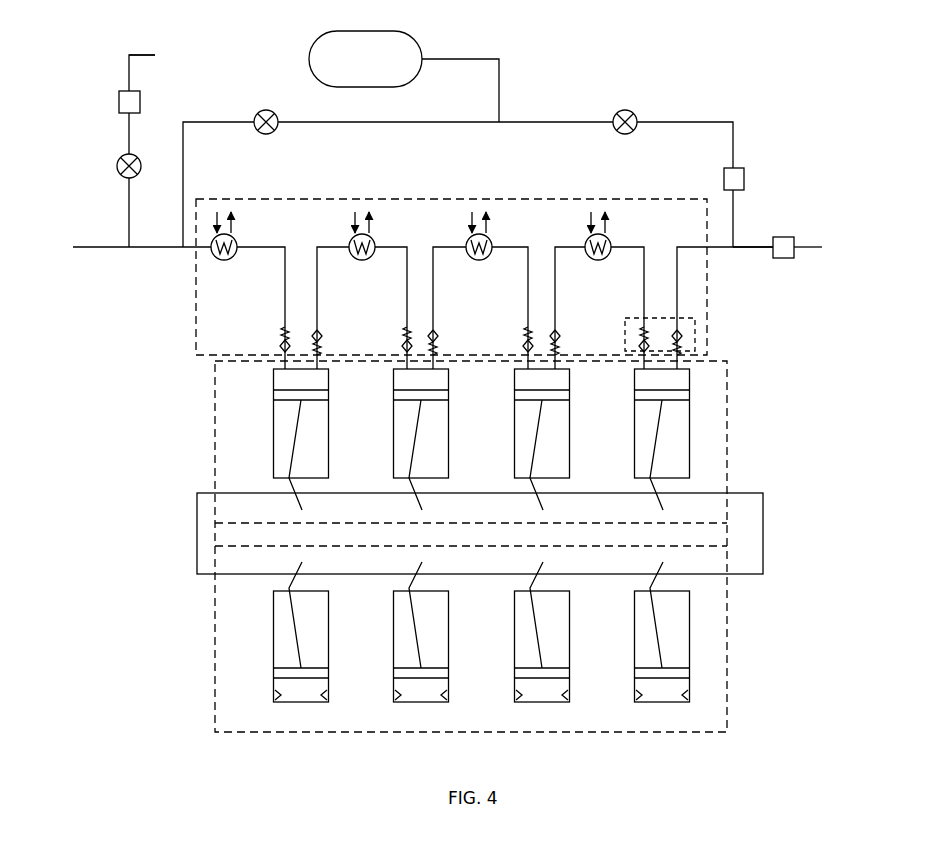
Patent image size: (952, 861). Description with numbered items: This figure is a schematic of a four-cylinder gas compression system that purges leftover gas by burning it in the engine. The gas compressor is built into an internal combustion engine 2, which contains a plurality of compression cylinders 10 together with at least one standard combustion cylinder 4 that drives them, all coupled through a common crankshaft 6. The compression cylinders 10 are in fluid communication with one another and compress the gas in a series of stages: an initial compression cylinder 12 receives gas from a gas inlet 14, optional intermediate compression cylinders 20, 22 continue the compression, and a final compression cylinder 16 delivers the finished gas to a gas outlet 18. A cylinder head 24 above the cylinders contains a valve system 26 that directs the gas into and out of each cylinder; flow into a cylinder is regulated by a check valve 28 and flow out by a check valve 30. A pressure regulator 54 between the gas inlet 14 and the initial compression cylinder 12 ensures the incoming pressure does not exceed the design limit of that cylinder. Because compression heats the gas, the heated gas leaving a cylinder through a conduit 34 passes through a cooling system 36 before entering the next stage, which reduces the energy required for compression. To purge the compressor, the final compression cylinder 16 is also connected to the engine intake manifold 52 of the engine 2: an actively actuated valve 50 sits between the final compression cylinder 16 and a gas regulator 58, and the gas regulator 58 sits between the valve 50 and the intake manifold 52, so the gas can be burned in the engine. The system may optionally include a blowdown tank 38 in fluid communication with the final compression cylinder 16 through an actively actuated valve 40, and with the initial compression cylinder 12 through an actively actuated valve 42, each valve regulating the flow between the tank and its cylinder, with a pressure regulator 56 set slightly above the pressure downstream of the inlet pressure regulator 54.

The internal combustion engine 2 is at (878, 305).
The standard combustion cylinder 4 is at (693, 645).
The common crankshaft 6 is at (766, 531).
The compression cylinders 10 is at (730, 417).
The initial compression cylinder 12 is at (692, 456).
The gas inlet 14 is at (821, 247).
The final compression cylinder 16 is at (329, 448).
The gas outlet 18 is at (129, 247).
The intermediate compression cylinder 20 is at (573, 454).
The intermediate compression cylinder 22 is at (451, 456).
The cylinder head 24 is at (193, 279).
The valve system 26 is at (693, 318).
The check valve 28 is at (688, 341).
The check valve 30 is at (638, 336).
The conduit 34 is at (646, 244).
The cooling system 36 is at (607, 231).
The blowdown tank 38 is at (404, 76).
The actively actuated valve 40 is at (262, 108).
The actively actuated valve 42 is at (622, 108).
The actively actuated valve 50 is at (118, 172).
The engine intake manifold 52 is at (154, 56).
The pressure regulator 54 is at (786, 235).
The pressure regulator 56 is at (746, 179).
The gas regulator 58 is at (117, 102).